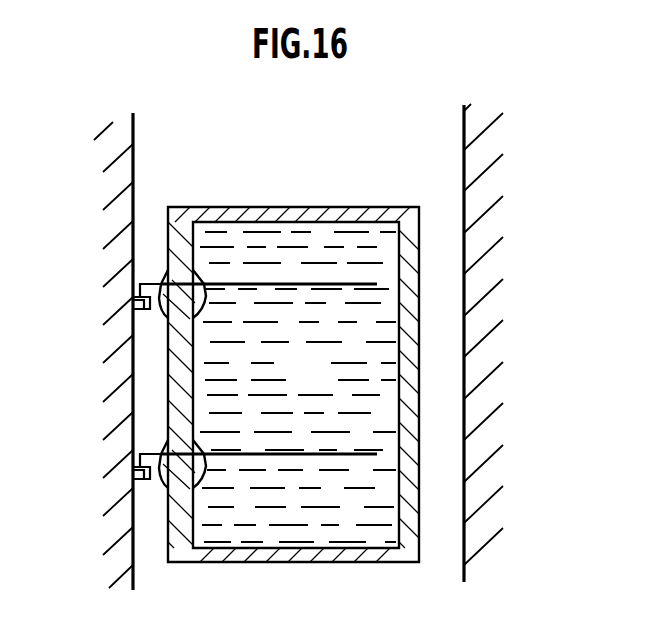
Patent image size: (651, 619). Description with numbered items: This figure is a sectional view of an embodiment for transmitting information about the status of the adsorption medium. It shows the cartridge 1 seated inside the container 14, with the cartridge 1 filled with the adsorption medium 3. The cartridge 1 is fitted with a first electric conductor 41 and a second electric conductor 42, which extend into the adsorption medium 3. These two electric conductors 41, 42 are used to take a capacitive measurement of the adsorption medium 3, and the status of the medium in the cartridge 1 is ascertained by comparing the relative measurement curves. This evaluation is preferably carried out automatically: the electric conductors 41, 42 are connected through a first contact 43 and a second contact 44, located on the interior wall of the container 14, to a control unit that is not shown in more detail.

The cartridge 1 is at (352, 209).
The adsorption medium 3 is at (321, 380).
The container 14 is at (478, 147).
The first electric conductor 41 is at (262, 281).
The second electric conductor 42 is at (348, 452).
The first contact 43 is at (133, 306).
The second contact 44 is at (134, 477).